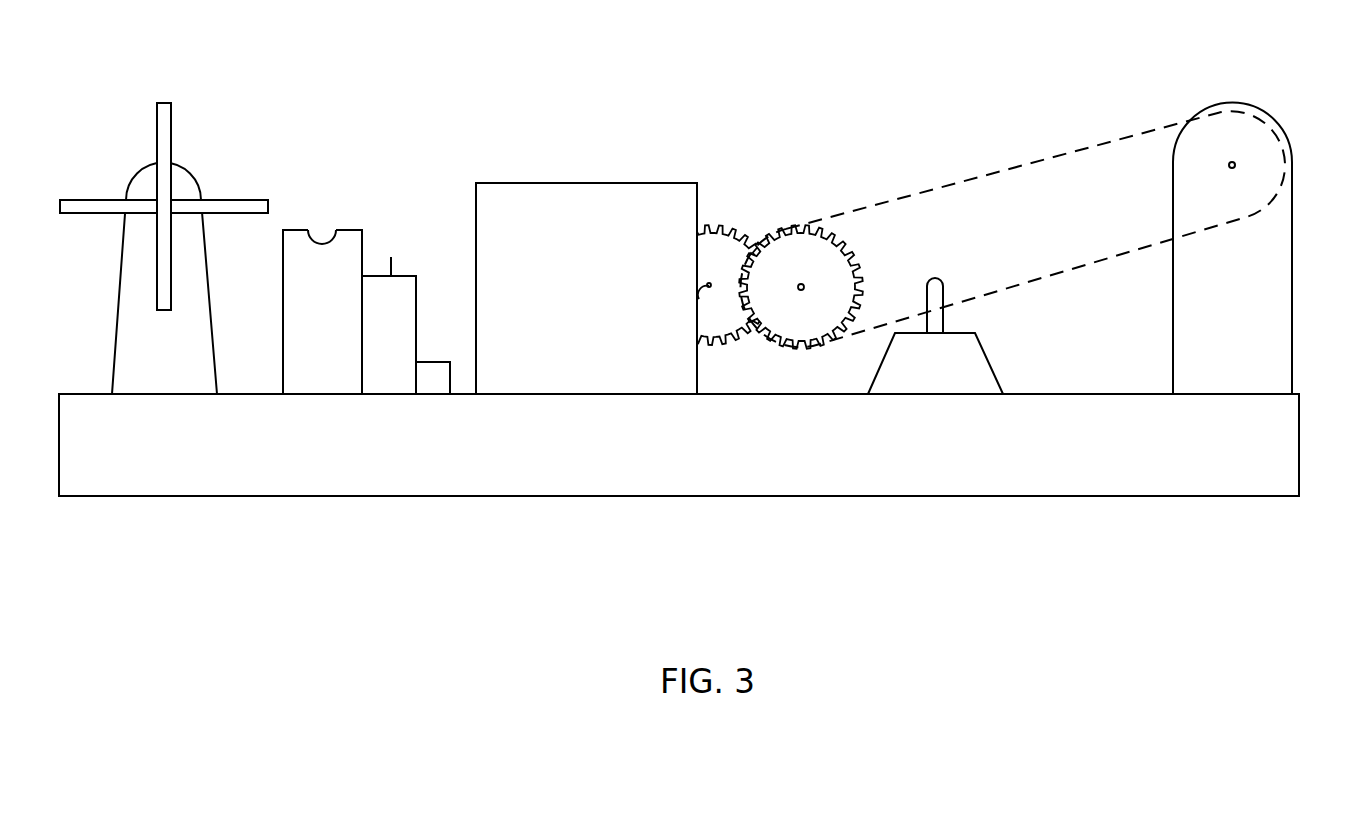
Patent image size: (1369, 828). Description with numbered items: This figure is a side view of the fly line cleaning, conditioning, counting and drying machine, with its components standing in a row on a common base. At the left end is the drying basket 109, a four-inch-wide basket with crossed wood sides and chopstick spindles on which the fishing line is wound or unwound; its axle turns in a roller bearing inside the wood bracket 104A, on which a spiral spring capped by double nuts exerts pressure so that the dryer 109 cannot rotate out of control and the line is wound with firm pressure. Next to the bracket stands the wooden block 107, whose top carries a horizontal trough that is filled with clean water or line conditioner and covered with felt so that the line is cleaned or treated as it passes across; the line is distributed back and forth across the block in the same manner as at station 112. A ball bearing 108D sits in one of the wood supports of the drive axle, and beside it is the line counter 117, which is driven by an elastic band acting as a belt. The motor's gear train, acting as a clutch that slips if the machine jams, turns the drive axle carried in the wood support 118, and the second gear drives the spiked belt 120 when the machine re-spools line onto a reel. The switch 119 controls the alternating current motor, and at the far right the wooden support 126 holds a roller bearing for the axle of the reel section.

The drying basket 109 is at (140, 112).
The bracket 104A is at (200, 162).
The station 112 is at (288, 210).
The wooden block 107 is at (328, 217).
The ball bearing 108D is at (400, 288).
The line counter 117 is at (439, 343).
The wood support 118 is at (807, 258).
The belt 120 is at (951, 159).
The switch 119 is at (1023, 345).
The wooden support 126 is at (1309, 235).